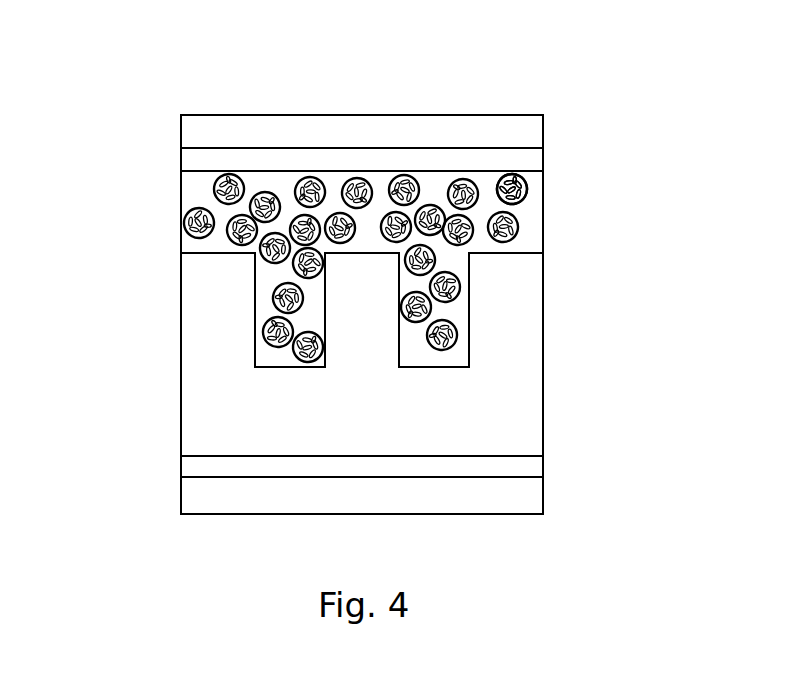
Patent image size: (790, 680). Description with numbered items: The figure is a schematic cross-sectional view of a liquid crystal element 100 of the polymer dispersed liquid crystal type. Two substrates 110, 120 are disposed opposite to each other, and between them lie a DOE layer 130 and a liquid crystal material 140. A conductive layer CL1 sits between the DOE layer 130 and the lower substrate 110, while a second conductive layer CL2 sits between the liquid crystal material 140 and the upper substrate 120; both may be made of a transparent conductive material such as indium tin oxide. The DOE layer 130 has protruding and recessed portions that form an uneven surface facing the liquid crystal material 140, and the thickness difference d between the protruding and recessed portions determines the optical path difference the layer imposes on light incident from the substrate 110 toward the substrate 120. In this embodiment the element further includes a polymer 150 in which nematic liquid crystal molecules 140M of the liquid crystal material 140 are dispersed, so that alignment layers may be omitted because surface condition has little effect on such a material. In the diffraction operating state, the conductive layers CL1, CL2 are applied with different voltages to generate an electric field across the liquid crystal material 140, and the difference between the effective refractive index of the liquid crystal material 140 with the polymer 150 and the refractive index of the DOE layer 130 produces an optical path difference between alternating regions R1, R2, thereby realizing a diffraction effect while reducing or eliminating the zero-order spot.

The liquid crystal element 100 is at (82, 50).
The substrate 110 is at (535, 497).
The conductive layer CL1 is at (535, 472).
The DOE layer 130 is at (535, 349).
The polymer 150 is at (185, 196).
The liquid crystal material 140 is at (527, 188).
The nematic liquid crystal molecules 140M is at (527, 195).
The conductive layer CL2 is at (533, 153).
The substrate 120 is at (533, 124).
The region R1 is at (538, 34).
The region R2 is at (360, 19).
The thickness difference d is at (655, 253).